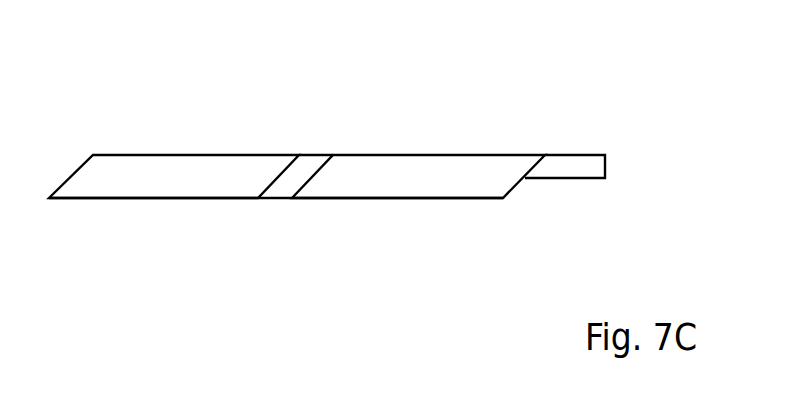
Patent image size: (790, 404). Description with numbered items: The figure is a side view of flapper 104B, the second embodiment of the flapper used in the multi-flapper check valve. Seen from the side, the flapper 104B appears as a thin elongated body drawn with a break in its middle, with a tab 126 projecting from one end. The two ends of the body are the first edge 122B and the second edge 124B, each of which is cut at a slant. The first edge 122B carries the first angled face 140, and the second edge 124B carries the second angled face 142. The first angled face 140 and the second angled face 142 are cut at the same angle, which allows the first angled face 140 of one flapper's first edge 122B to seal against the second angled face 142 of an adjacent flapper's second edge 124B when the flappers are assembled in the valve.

The flapper 104B is at (250, 92).
The second edge 124B is at (155, 155).
The first edge 122B is at (408, 155).
The tab 126 is at (573, 167).
The second angled face 142 is at (147, 175).
The first angled face 140 is at (388, 175).